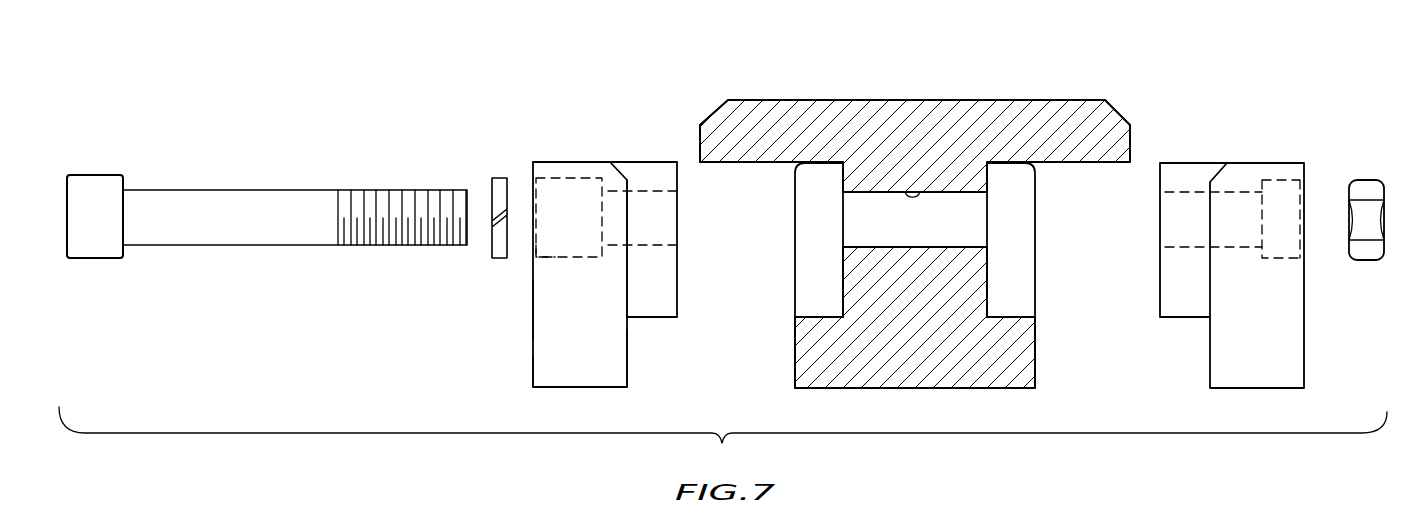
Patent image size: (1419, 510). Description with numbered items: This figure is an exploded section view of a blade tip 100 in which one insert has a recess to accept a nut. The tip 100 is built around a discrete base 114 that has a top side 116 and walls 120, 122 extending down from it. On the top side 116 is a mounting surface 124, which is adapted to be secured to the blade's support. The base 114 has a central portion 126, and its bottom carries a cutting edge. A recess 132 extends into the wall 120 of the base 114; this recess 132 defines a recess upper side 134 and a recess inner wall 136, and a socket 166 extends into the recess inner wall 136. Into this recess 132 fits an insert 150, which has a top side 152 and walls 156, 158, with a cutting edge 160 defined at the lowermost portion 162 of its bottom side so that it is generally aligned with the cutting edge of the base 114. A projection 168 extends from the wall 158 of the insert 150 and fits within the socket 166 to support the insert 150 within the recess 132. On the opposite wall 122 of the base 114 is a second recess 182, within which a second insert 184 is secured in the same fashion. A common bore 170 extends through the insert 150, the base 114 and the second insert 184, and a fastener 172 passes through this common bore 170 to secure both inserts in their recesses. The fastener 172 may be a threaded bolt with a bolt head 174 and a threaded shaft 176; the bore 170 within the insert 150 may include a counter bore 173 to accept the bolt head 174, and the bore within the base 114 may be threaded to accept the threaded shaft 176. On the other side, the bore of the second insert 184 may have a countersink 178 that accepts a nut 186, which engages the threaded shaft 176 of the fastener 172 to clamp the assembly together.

The tip 100 is at (727, 62).
The base 114 is at (877, 105).
The top side 116 is at (1048, 103).
The wall 120 is at (700, 128).
The wall 122 is at (1131, 128).
The mounting surface 124 is at (1085, 98).
The central portion 126 is at (932, 372).
The recess 132 is at (778, 378).
The recess upper side 134 is at (750, 166).
The recess inner wall 136 is at (795, 340).
The insert 150 is at (547, 352).
The top side 152 is at (577, 162).
The wall 156 is at (533, 317).
The wall 158 is at (628, 365).
The cutting edge 160 is at (570, 388).
The lowermost portion 162 is at (533, 374).
The socket 166 is at (813, 316).
The projection 168 is at (650, 172).
The common bore 170 is at (665, 241).
The fastener 172 is at (218, 189).
The counter bore 173 is at (537, 258).
The bolt head 174 is at (108, 174).
The threaded shaft 176 is at (403, 190).
The countersink 178 is at (1303, 252).
The second recess 182 is at (1060, 332).
The second insert 184 is at (1180, 163).
The nut 186 is at (1362, 180).